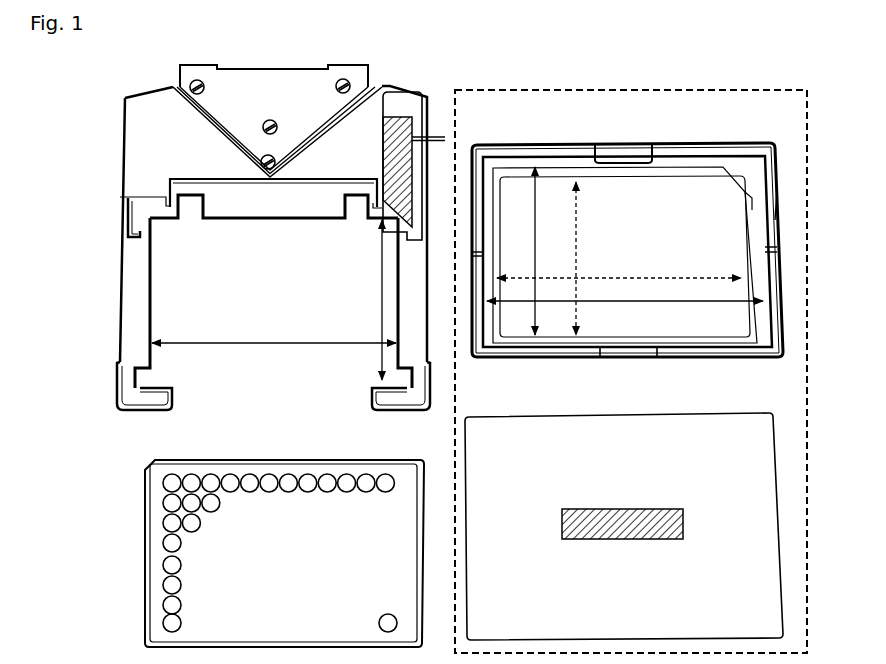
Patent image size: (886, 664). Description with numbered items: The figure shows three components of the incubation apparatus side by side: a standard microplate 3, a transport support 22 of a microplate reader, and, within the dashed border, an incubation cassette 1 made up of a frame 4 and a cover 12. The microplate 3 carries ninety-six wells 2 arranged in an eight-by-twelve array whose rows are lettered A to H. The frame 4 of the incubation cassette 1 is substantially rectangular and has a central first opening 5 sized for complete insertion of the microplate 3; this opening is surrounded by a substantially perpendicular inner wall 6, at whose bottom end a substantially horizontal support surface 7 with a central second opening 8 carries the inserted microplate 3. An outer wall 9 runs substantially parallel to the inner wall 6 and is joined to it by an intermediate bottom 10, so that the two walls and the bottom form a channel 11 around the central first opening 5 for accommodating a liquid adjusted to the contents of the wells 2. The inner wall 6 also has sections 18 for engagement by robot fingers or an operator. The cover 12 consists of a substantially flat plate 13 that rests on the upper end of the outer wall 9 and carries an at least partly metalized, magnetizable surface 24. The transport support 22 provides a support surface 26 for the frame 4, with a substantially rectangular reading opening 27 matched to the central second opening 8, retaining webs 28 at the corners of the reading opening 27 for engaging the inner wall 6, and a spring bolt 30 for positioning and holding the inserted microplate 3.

The incubation cassette 1 is at (578, 88).
The well 2 is at (212, 507).
The microplate 3 is at (284, 553).
The frame 4 is at (705, 132).
The central first opening 5 is at (625, 251).
The inner wall 6 is at (583, 164).
The support surface 7 is at (652, 170).
The central second opening 8 is at (619, 258).
The outer wall 9 is at (708, 153).
The intermediate bottom 10 is at (685, 158).
The channel 11 is at (772, 190).
The cover 12 is at (540, 412).
The plate 13 is at (505, 485).
The sections 18 is at (622, 158).
The transport support 22 is at (273, 213).
The magnetizable surface 24 is at (600, 525).
The support surface 26 is at (383, 392).
The reading opening 27 is at (274, 300).
The retaining webs 28 is at (145, 196).
The spring bolt 30 is at (383, 170).